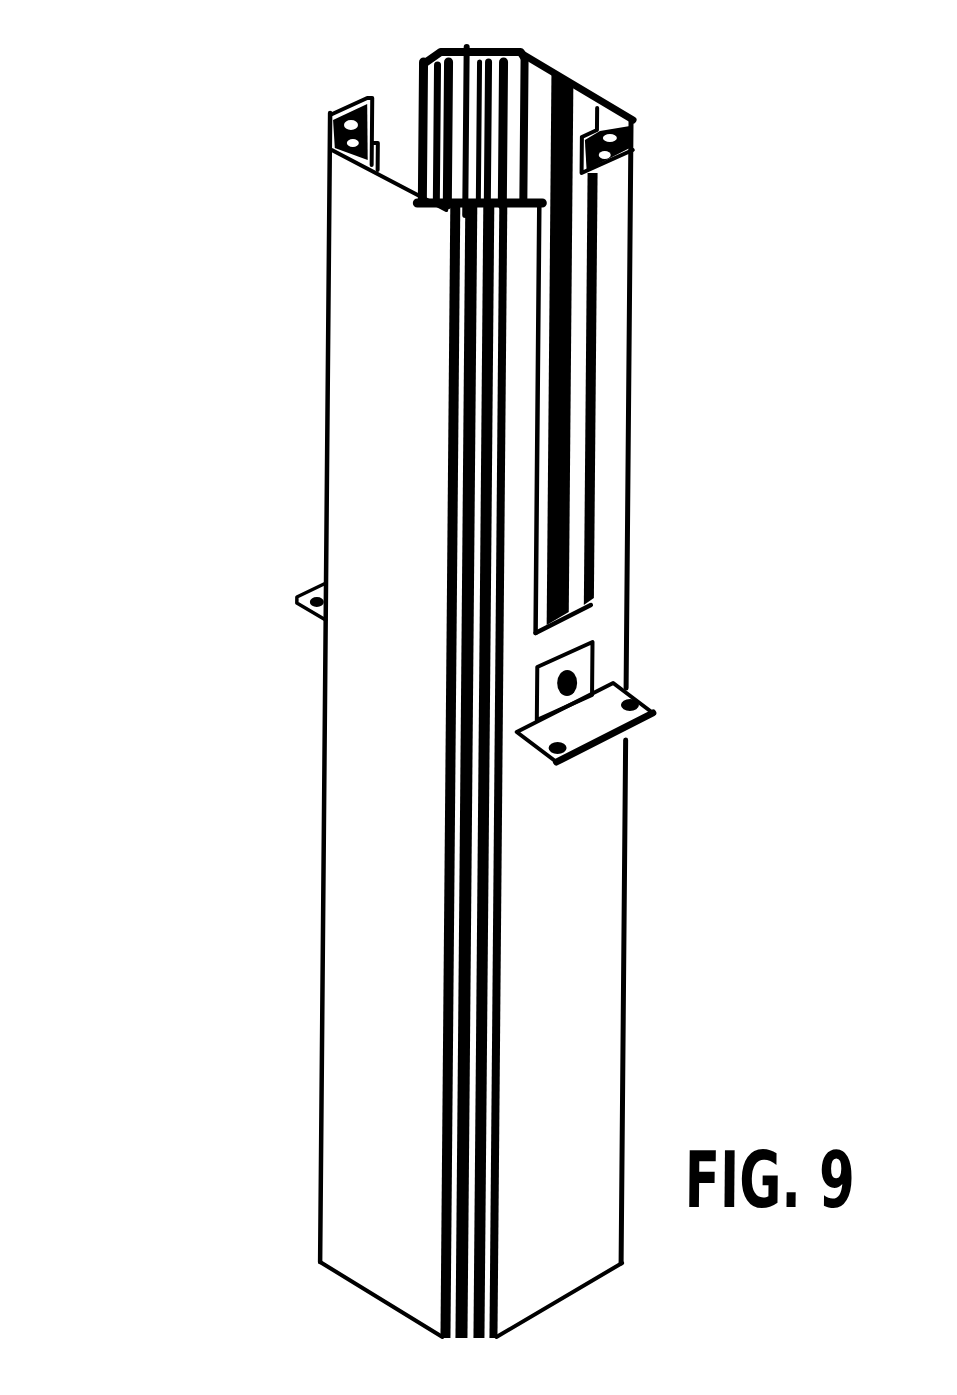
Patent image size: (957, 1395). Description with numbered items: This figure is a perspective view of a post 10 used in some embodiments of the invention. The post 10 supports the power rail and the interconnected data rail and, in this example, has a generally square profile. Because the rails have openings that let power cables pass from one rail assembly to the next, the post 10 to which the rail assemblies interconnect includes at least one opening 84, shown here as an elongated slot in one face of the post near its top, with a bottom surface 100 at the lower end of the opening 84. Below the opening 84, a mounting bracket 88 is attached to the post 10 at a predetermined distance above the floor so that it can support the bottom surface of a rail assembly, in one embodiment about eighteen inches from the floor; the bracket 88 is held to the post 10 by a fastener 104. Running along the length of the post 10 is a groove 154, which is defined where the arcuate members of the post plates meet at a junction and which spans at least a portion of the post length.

The post 10 is at (202, 457).
The opening 84 is at (405, 133).
The bottom surface 100 is at (575, 610).
The fastener 104 is at (572, 678).
The mounting bracket 88 is at (640, 720).
The groove 154 is at (500, 937).